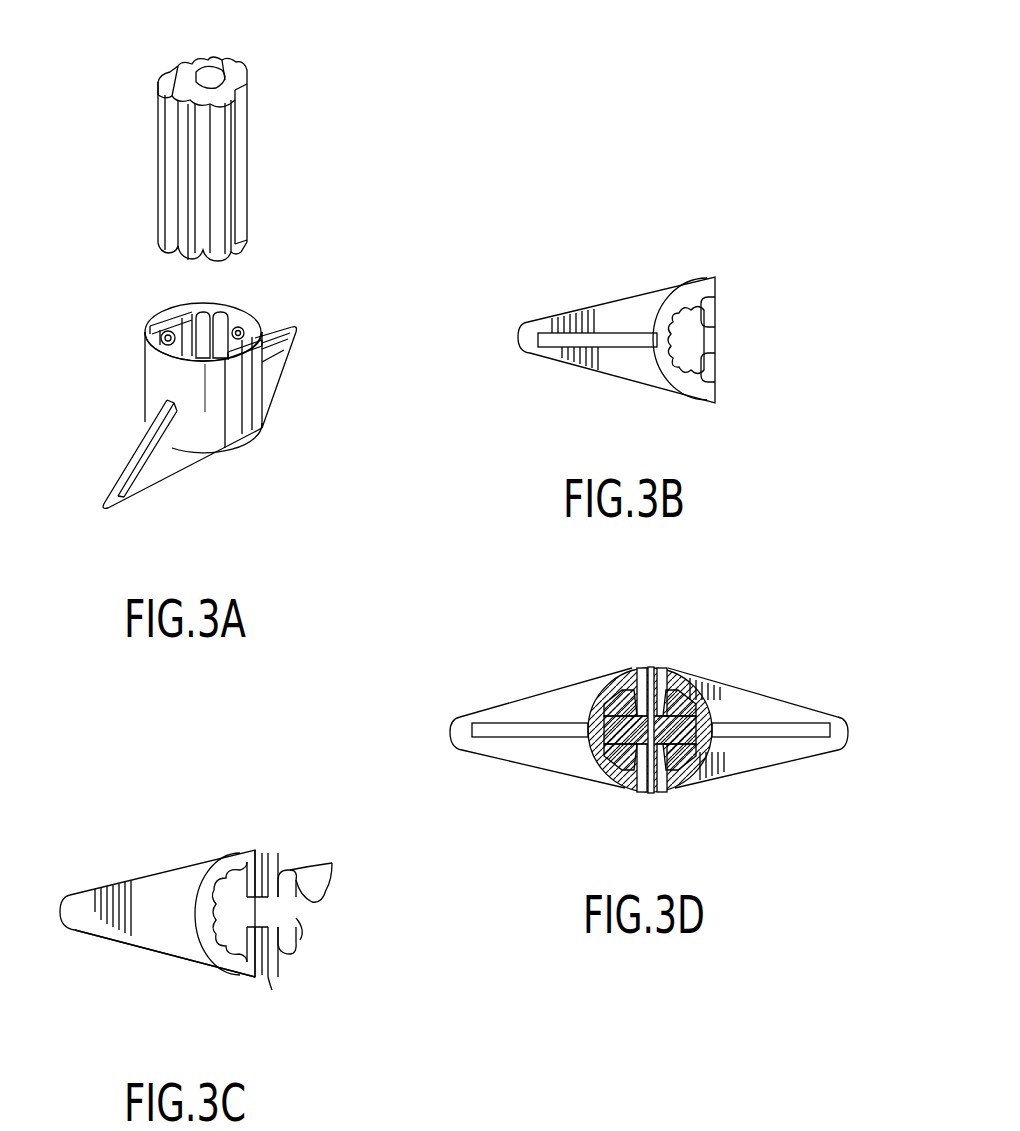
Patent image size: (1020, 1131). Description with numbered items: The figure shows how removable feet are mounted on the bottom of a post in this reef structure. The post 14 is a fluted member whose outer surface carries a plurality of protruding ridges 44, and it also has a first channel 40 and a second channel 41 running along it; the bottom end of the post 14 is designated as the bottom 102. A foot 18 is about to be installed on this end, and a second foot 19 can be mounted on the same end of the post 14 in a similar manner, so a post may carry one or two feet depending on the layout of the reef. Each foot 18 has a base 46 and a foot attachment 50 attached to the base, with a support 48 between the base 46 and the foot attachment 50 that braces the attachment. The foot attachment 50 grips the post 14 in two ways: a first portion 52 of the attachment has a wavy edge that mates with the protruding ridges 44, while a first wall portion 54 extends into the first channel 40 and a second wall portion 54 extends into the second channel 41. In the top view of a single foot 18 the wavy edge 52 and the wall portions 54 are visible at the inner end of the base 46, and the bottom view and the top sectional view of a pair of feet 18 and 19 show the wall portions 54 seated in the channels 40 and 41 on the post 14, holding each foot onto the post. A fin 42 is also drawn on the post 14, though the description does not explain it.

In FIG. 3A, the post 14 is at (168, 136).
In FIG. 3C, the post 14 is at (300, 935).
In FIG. 3D, the post 14 is at (620, 745).
In FIG. 3A, the foot 18 is at (205, 462).
In FIG. 3C, the foot 18 is at (190, 864).
In FIG. 3D, the foot 18 is at (579, 678).
In FIG. 3A, the second foot 19 is at (286, 378).
In FIG. 3D, the second foot 19 is at (770, 686).
In FIG. 3A, the first channel 40 is at (214, 64).
In FIG. 3C, the first channel 40 is at (292, 866).
In FIG. 3C, the second channel 41 is at (270, 977).
In FIG. 3A, the fin 42 is at (240, 96).
In FIG. 3A, the protruding ridges 44 is at (180, 200).
In FIG. 3C, the protruding ridges 44 is at (333, 863).
In FIG. 3A, the base 46 is at (155, 480).
In FIG. 3B, the base 46 is at (598, 318).
In FIG. 3C, the base 46 is at (148, 930).
In FIG. 3D, the base 46 is at (540, 750).
In FIG. 3A, the support 48 is at (138, 442).
In FIG. 3B, the support 48 is at (624, 338).
In FIG. 3D, the support 48 is at (522, 722).
In FIG. 3A, the foot attachment 50 is at (224, 420).
In FIG. 3B, the foot attachment 50 is at (666, 372).
In FIG. 3A, the first portion 52 is at (160, 334).
In FIG. 3B, the first portion 52 is at (692, 343).
In FIG. 3C, the first portion 52 is at (228, 940).
In FIG. 3D, the first portion 52 is at (688, 748).
In FIG. 3A, the wall portions 54 is at (234, 340).
In FIG. 3B, the wall portions 54 is at (712, 368).
In FIG. 3C, the wall portions 54 is at (256, 876).
In FIG. 3D, the wall portions 54 is at (638, 796).
In FIG. 3C, the bottom of the post 102 is at (300, 940).